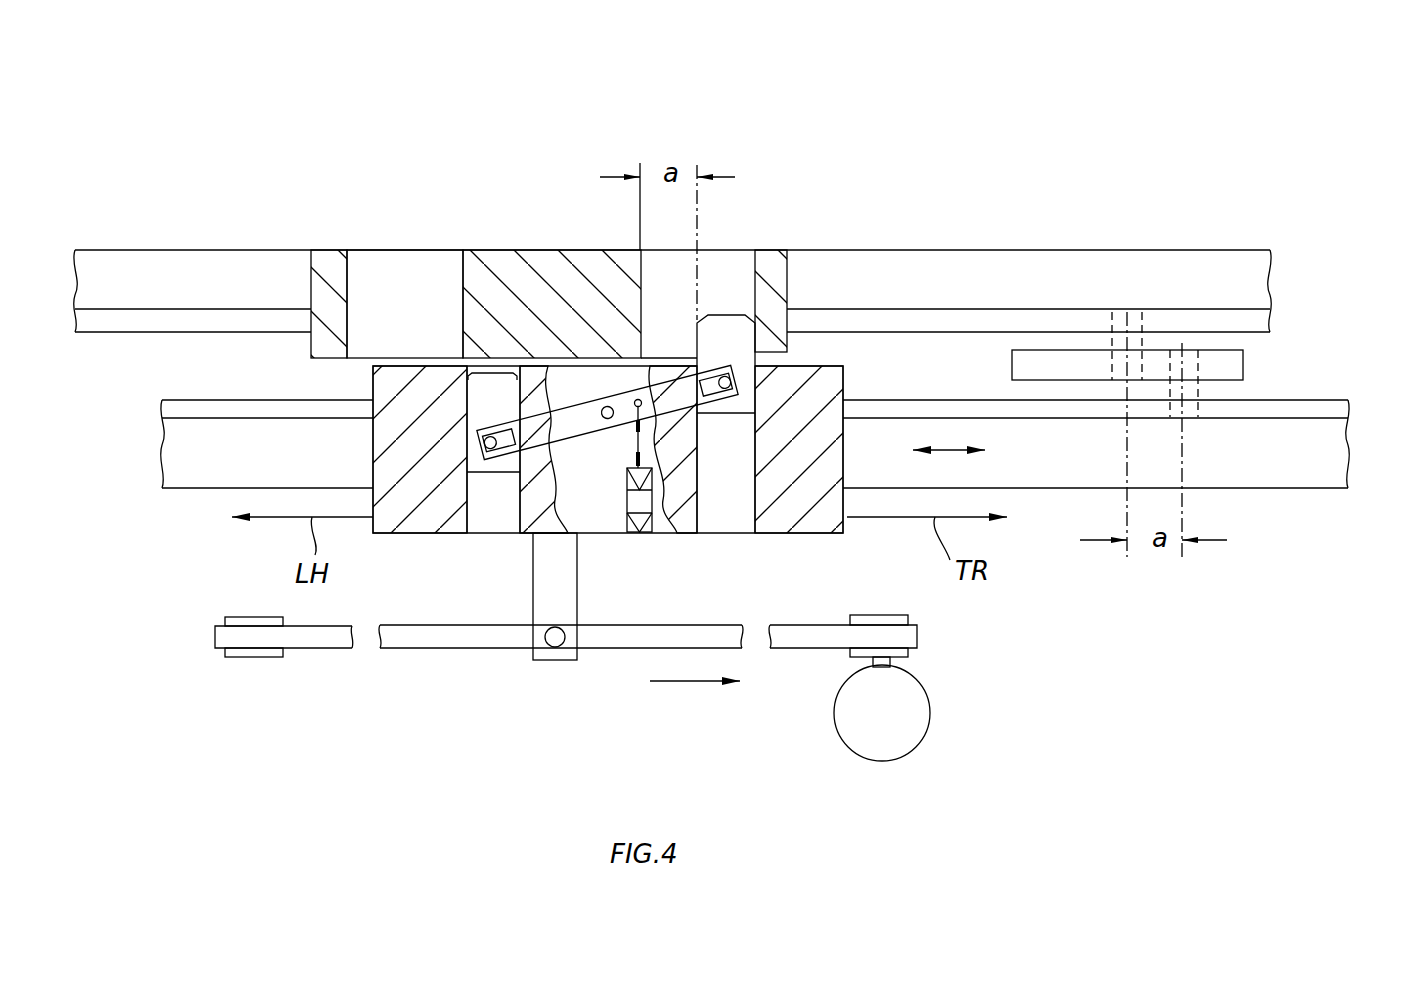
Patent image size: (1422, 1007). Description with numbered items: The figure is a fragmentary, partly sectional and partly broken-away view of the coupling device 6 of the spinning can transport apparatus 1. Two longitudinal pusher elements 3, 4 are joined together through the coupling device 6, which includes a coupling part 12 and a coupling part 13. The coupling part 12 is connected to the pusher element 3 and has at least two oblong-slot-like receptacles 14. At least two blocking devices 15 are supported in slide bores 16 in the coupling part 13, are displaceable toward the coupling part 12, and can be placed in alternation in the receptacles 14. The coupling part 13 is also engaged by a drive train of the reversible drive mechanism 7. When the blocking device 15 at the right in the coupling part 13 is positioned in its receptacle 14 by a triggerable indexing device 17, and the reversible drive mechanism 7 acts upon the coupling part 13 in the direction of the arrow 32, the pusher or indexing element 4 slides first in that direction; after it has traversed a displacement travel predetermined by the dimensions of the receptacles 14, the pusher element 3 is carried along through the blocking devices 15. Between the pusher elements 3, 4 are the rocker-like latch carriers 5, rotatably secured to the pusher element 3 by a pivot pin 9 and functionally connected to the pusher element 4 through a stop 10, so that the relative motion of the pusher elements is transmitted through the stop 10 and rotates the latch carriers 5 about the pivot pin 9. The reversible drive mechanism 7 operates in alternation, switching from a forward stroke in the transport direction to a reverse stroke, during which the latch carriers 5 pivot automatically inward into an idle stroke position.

The spinning can transport apparatus 1 is at (1045, 183).
The pusher element 3 is at (1235, 255).
The pusher element 4 is at (1325, 435).
The latch carrier 5 is at (1017, 370).
The coupling device 6 is at (352, 165).
The reversible drive mechanism 7 is at (913, 737).
The pivot pin 9 is at (1133, 327).
The stop 10 is at (1202, 390).
The coupling part 12 is at (523, 258).
The coupling part 13 is at (807, 507).
The oblong-slot-like receptacle 14 is at (417, 258).
The blocking device 15 is at (737, 333).
The slide bore 16 is at (720, 535).
The indexing device 17 is at (613, 535).
The arrow 32 is at (680, 681).